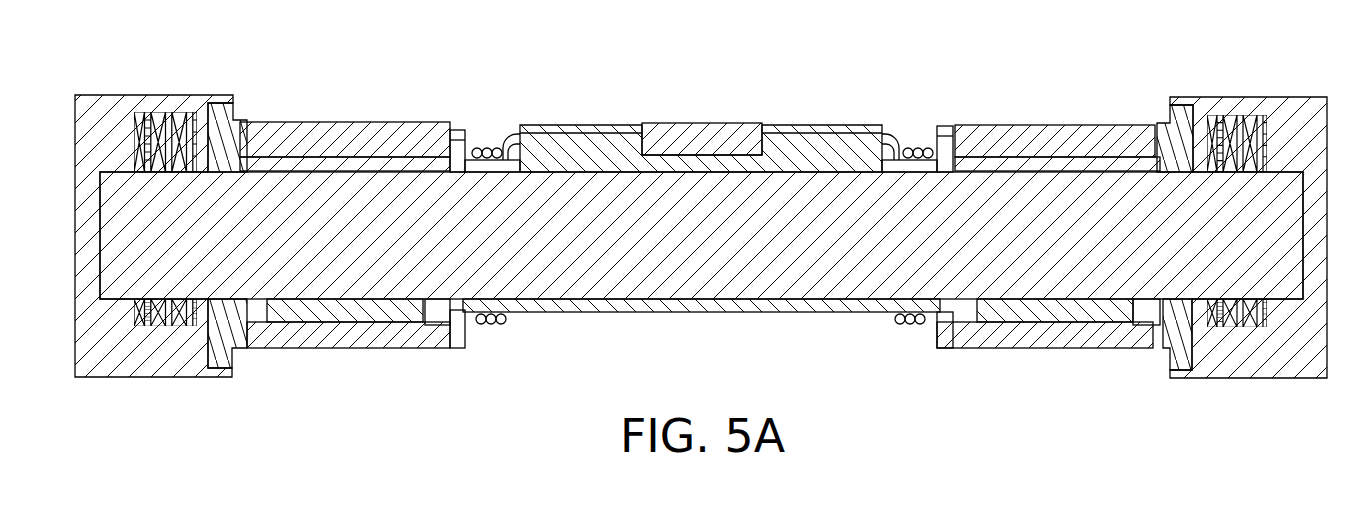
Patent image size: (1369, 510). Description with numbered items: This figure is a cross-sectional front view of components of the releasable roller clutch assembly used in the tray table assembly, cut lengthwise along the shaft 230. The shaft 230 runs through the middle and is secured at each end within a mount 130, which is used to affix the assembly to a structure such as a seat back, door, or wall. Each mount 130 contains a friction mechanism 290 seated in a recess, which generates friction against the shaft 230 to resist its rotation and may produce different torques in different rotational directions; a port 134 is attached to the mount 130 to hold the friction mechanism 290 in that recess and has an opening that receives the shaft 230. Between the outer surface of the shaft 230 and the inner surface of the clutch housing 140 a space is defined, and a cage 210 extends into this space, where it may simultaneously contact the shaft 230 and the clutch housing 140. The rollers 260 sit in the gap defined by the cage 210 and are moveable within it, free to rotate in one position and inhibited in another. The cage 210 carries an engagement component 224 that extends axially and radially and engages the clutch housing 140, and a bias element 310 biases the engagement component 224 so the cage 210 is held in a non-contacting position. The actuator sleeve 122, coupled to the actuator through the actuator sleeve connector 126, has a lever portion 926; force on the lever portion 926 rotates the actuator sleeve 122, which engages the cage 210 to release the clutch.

The actuator sleeve 122 is at (575, 152).
The actuator sleeve connector 126 is at (690, 132).
The mount 130 is at (139, 345).
The port 134 is at (228, 143).
The clutch housing 140 is at (340, 134).
The cage 210 is at (400, 160).
The engagement component 224 is at (476, 132).
The shaft 230 is at (680, 265).
The rollers 260 is at (340, 315).
The friction mechanism 290 is at (162, 114).
The bias element 310 is at (915, 150).
The lever portion 926 is at (805, 142).